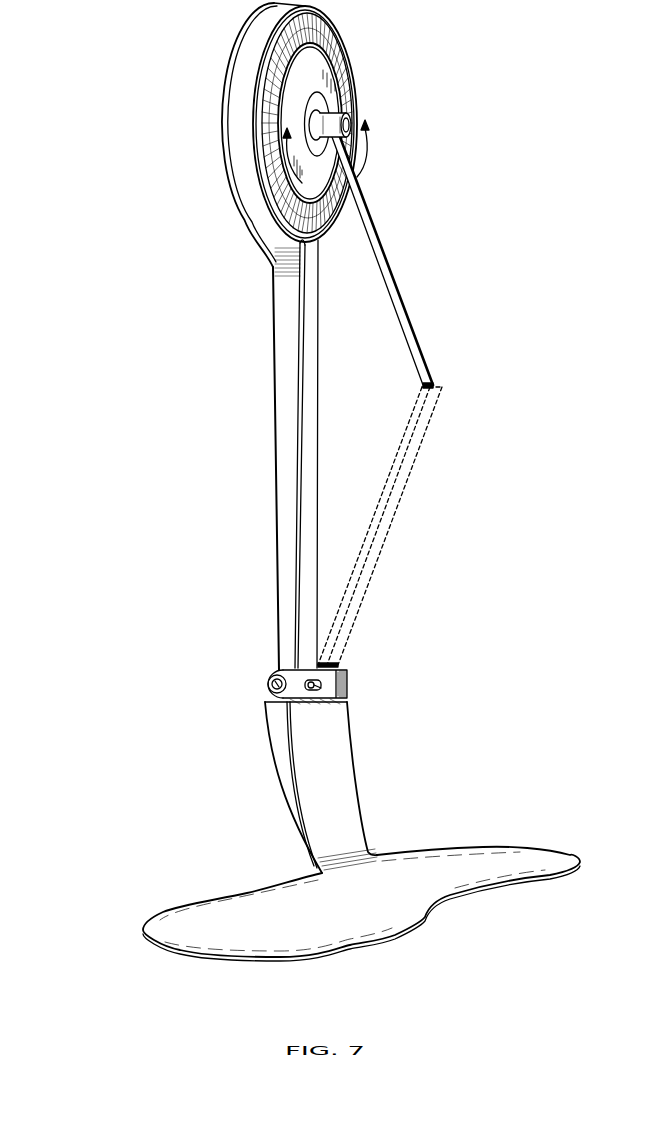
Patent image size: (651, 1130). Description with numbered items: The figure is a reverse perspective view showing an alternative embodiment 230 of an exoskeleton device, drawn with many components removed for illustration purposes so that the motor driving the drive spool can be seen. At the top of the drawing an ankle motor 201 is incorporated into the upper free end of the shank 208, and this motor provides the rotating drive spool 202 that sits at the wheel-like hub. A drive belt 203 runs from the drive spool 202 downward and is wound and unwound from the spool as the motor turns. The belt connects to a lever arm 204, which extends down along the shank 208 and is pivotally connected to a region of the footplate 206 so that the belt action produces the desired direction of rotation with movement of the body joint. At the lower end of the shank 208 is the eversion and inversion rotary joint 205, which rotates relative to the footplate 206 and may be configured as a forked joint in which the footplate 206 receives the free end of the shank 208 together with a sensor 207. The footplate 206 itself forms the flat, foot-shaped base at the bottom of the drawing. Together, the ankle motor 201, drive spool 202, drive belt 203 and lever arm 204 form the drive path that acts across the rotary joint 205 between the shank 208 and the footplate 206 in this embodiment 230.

The ankle motor 201 is at (252, 42).
The drive spool 202 is at (330, 122).
The drive belt 203 is at (403, 320).
The lever arm 204 is at (398, 493).
The eversion and inversion rotary joint 205 is at (268, 688).
The footplate 206 is at (364, 812).
The sensor 207 is at (323, 696).
The shank 208 is at (282, 405).
The alternative embodiment of exoskeleton 230 is at (168, 496).